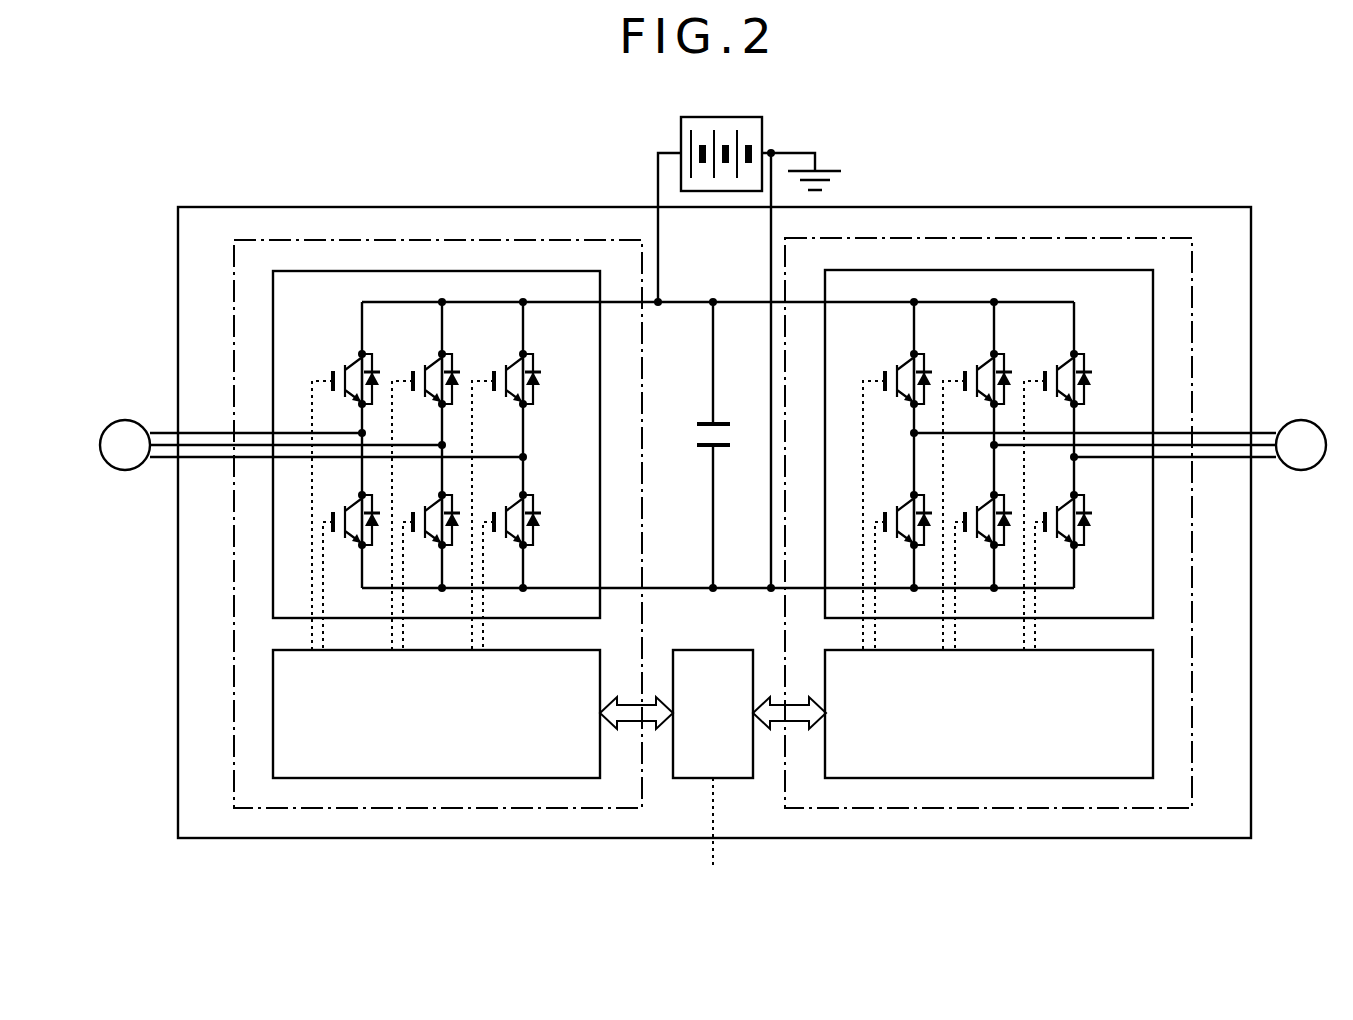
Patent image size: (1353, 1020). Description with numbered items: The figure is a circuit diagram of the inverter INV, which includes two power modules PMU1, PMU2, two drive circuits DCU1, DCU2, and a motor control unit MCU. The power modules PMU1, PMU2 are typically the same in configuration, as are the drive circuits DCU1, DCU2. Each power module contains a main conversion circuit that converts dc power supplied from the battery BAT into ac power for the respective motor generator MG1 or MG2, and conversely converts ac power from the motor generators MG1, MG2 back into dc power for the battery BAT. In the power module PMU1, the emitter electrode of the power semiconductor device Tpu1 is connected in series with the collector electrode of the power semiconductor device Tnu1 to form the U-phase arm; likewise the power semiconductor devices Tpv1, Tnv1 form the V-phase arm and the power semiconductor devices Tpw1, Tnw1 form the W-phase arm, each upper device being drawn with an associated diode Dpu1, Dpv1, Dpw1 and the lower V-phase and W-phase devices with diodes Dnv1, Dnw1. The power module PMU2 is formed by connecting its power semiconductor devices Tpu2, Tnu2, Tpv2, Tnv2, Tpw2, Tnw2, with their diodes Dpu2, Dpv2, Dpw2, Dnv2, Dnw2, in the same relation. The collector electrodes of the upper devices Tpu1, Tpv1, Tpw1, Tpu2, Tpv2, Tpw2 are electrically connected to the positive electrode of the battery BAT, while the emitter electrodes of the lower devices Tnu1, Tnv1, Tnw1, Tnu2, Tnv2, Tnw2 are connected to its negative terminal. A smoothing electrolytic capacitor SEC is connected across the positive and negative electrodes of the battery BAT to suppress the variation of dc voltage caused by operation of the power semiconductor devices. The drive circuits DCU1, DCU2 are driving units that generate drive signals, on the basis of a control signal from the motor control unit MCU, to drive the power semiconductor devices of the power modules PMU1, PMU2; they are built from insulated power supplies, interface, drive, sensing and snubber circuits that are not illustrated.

The inverter INV is at (1181, 176).
The battery BAT is at (721, 117).
The smoothing electrolytic capacitor SEC is at (697, 437).
The motor generator MG1 is at (120, 471).
The motor generator MG2 is at (1299, 471).
The power module PMU1 is at (273, 327).
The power module PMU2 is at (1153, 325).
The drive circuit DCU1 is at (273, 713).
The drive circuit DCU2 is at (1153, 713).
The motor control unit MCU is at (714, 650).
The power semiconductor device Tpu1 is at (341, 366).
The diode Dpu1 is at (378, 365).
The power semiconductor device Tpv1 is at (421, 366).
The diode Dpv1 is at (458, 365).
The power semiconductor device Tpw1 is at (502, 366).
The diode Dpw1 is at (539, 365).
The power semiconductor device Tnu1 is at (341, 507).
The power semiconductor device Tnv1 is at (421, 507).
The diode Dnv1 is at (458, 511).
The power semiconductor device Tnw1 is at (502, 507).
The diode Dnw1 is at (539, 511).
The power semiconductor device Tpu2 is at (893, 366).
The diode Dpu2 is at (930, 365).
The power semiconductor device Tpv2 is at (973, 366).
The diode Dpv2 is at (1010, 365).
The power semiconductor device Tpw2 is at (1053, 366).
The diode Dpw2 is at (1090, 365).
The power semiconductor device Tnu2 is at (893, 507).
The power semiconductor device Tnv2 is at (973, 507).
The diode Dnv2 is at (1010, 511).
The power semiconductor device Tnw2 is at (1053, 507).
The diode Dnw2 is at (1090, 511).